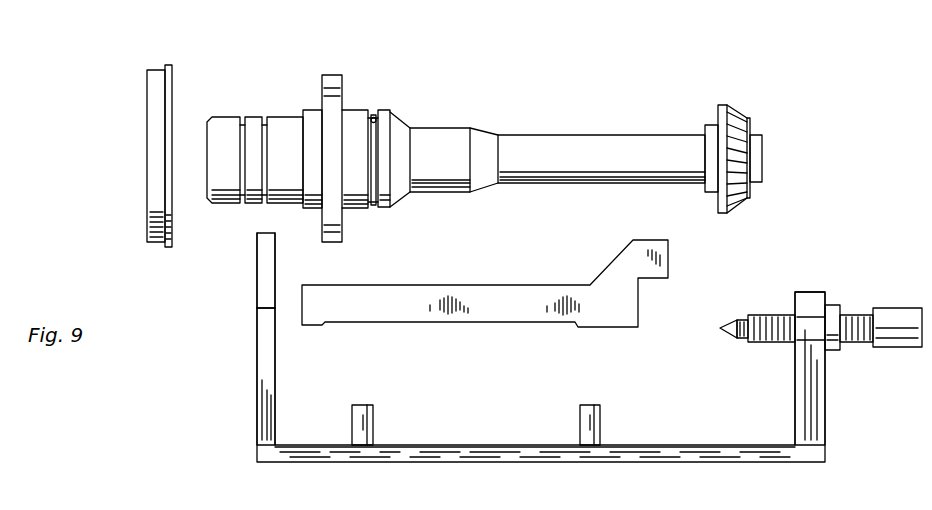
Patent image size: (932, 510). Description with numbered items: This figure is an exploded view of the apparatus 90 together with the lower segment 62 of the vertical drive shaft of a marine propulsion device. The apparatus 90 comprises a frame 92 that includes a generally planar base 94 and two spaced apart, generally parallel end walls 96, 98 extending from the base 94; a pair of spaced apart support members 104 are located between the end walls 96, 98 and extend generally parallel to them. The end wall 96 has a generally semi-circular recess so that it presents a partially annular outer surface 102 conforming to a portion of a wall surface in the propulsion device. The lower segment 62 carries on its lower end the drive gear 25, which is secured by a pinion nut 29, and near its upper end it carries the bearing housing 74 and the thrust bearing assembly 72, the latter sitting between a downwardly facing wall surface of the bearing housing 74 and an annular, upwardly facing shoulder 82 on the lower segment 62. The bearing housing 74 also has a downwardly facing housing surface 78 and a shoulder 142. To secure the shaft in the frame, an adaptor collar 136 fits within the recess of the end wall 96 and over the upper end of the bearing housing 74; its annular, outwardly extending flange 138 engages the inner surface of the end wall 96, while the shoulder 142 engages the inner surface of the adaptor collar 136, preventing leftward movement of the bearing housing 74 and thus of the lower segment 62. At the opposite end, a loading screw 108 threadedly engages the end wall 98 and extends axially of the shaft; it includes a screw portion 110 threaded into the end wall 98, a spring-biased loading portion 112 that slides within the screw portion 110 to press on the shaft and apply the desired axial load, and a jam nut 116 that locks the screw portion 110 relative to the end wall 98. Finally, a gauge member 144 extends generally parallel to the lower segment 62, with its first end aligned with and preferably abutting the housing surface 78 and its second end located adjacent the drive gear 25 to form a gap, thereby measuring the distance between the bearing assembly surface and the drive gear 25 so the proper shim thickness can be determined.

The adaptor collar 136 is at (141, 113).
The flange 138 is at (168, 66).
The bearing housing 74 is at (221, 118).
The shoulder 142 is at (297, 116).
The housing surface 78 is at (342, 80).
The second bearing assembly 72 is at (373, 205).
The shoulder 82 is at (383, 112).
The lower segment 62 is at (540, 146).
The drive gear 25 is at (735, 107).
The pinion nut 29 is at (762, 137).
The apparatus 90 is at (248, 446).
The frame 92 is at (496, 446).
The base 94 is at (696, 446).
The outer surface 102 is at (257, 258).
The end wall 96 is at (264, 350).
The support members 104 is at (360, 408).
The gauge member 144 is at (510, 286).
The end wall 98 is at (800, 362).
The loading portion 112 is at (735, 319).
The loading screw 108 is at (866, 291).
The jam nut 116 is at (836, 305).
The screw portion 110 is at (904, 316).